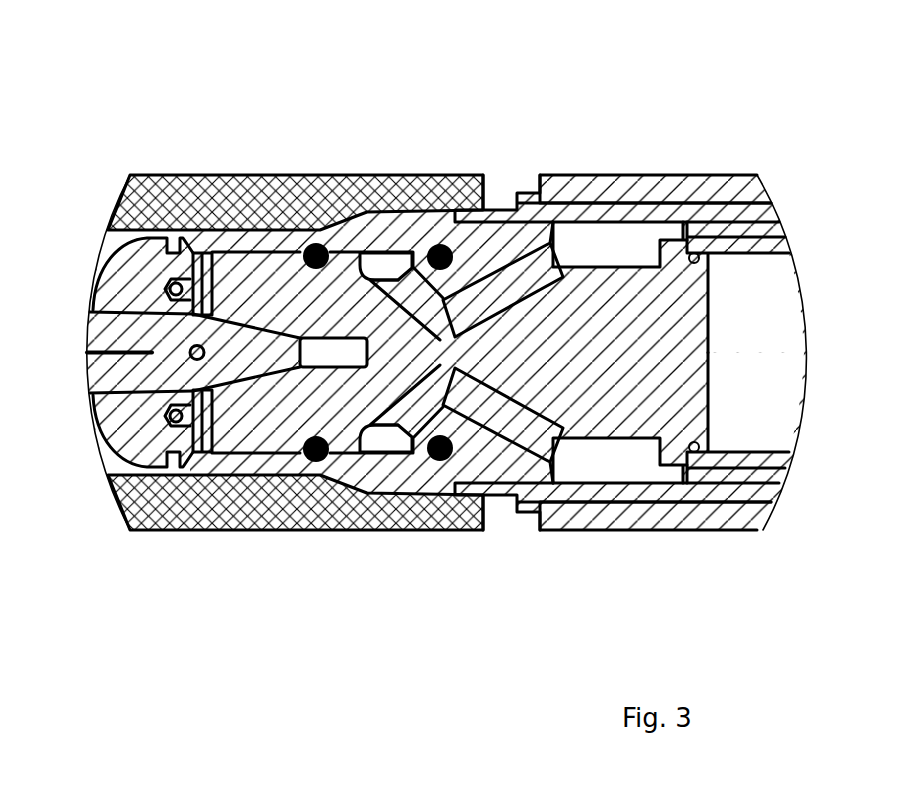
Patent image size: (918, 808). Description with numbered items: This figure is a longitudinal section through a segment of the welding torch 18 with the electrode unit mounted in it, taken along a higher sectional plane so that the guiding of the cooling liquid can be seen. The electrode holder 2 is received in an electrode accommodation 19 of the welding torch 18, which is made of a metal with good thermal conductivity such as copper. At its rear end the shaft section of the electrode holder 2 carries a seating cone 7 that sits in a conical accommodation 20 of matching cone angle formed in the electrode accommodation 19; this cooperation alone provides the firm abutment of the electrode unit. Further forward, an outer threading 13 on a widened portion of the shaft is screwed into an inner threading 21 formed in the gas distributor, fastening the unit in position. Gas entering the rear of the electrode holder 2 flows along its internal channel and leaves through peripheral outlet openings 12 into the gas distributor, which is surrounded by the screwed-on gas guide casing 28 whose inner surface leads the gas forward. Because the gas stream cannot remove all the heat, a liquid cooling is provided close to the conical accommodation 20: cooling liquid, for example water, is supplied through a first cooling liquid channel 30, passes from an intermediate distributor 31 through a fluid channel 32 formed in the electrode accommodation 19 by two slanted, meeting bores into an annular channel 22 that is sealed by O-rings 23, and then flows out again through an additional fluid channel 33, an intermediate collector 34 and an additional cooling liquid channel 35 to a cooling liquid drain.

The electrode holder 2 is at (196, 270).
The seating cone 7 is at (260, 383).
The outlet openings 12 is at (178, 440).
The outer threading 13 is at (122, 265).
The welding torch 18 is at (600, 137).
The electrode accommodation 19 is at (282, 407).
The conical accommodation 20 is at (296, 325).
The inner threading 21 is at (125, 415).
The annular channel 22 is at (362, 490).
The O-rings 23 is at (440, 462).
The gas guide casing 28 is at (277, 193).
The first cooling liquid channel 30 is at (757, 185).
The intermediate distributor 31 is at (622, 243).
The upper locking segment 32 is at (513, 287).
The additional fluid channel 33 is at (505, 430).
The intermediate collector 34 is at (619, 465).
The additional cooling liquid channel 35 is at (742, 470).